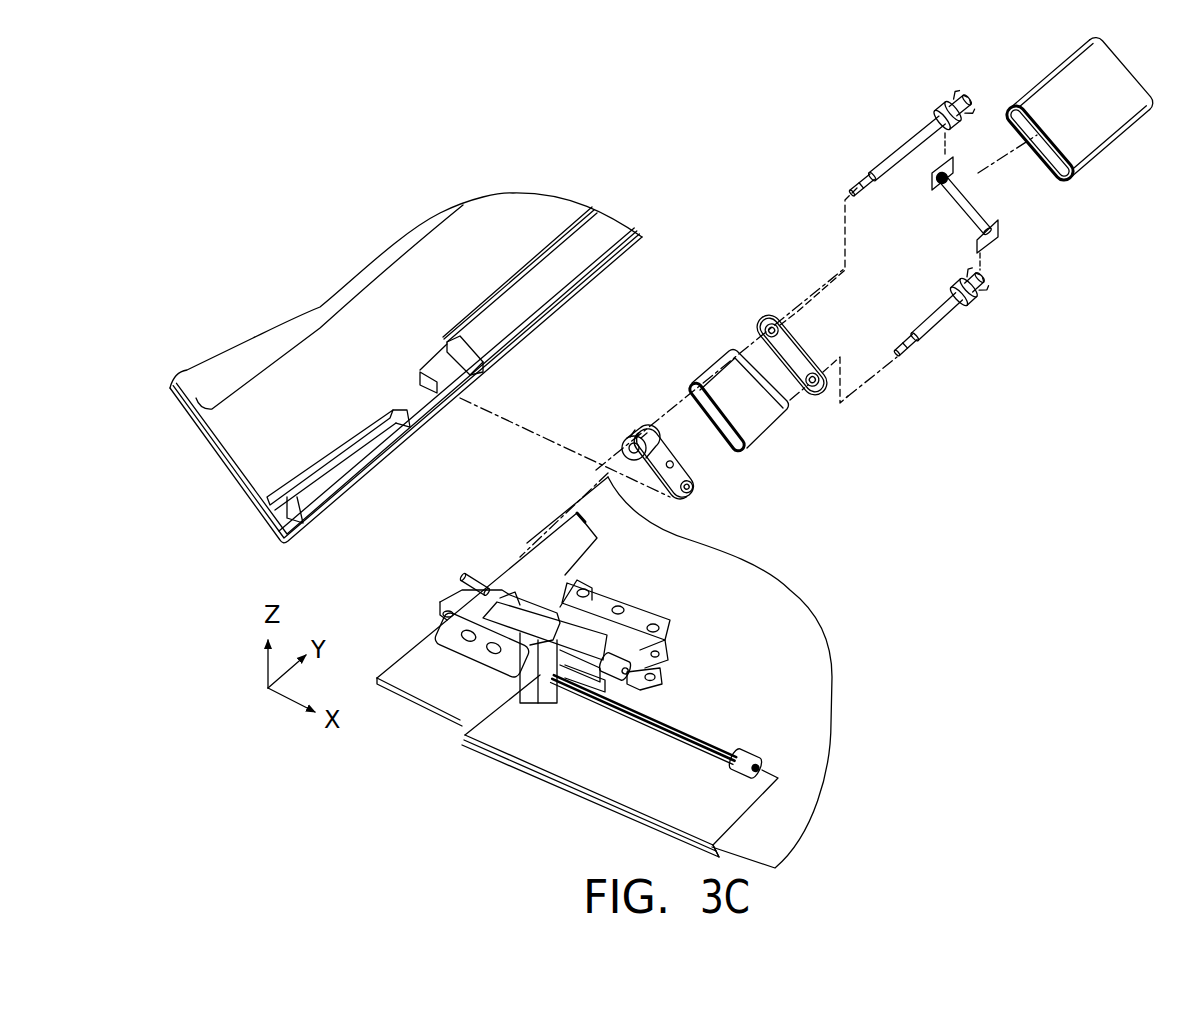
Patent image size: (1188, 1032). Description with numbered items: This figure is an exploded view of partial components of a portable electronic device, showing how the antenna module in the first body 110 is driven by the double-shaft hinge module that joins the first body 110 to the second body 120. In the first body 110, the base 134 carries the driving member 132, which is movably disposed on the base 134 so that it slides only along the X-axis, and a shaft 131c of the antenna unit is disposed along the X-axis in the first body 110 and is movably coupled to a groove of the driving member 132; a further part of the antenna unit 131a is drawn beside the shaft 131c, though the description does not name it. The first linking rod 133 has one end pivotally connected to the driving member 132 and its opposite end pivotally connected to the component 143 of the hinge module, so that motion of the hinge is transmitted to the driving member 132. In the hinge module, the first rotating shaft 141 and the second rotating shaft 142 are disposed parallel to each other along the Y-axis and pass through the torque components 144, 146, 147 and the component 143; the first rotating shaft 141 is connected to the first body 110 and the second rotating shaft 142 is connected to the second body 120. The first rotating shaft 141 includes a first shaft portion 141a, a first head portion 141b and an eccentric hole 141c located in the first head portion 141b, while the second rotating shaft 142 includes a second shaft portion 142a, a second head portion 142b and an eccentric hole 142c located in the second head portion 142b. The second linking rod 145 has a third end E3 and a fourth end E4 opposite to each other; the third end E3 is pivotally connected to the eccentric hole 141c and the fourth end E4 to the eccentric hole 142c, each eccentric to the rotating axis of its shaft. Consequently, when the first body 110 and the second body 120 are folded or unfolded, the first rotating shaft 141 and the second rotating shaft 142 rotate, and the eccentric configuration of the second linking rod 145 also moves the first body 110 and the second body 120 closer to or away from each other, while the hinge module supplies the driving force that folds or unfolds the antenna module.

The first body 110 is at (738, 577).
The second body 120 is at (258, 397).
The bottom plate 131a is at (515, 737).
The shaft 131c is at (717, 755).
The driving member 132 is at (582, 633).
The first linking rod 133 is at (467, 580).
The base 134 is at (653, 607).
The first rotating shaft 141 is at (886, 116).
The first shaft portion 141a is at (880, 153).
The first head portion 141b is at (933, 107).
The eccentric hole 141c is at (945, 97).
The second rotating shaft 142 is at (987, 338).
The second shaft portion 142a is at (947, 323).
The second head portion 142b is at (980, 293).
The eccentric hole 142c is at (993, 283).
The component 143 is at (637, 415).
The torque component 144 is at (1115, 128).
The second linking rod 145 is at (972, 233).
The torque component 146 is at (710, 352).
The torque component 147 is at (762, 310).
The third end E3 is at (935, 190).
The fourth end E4 is at (980, 238).